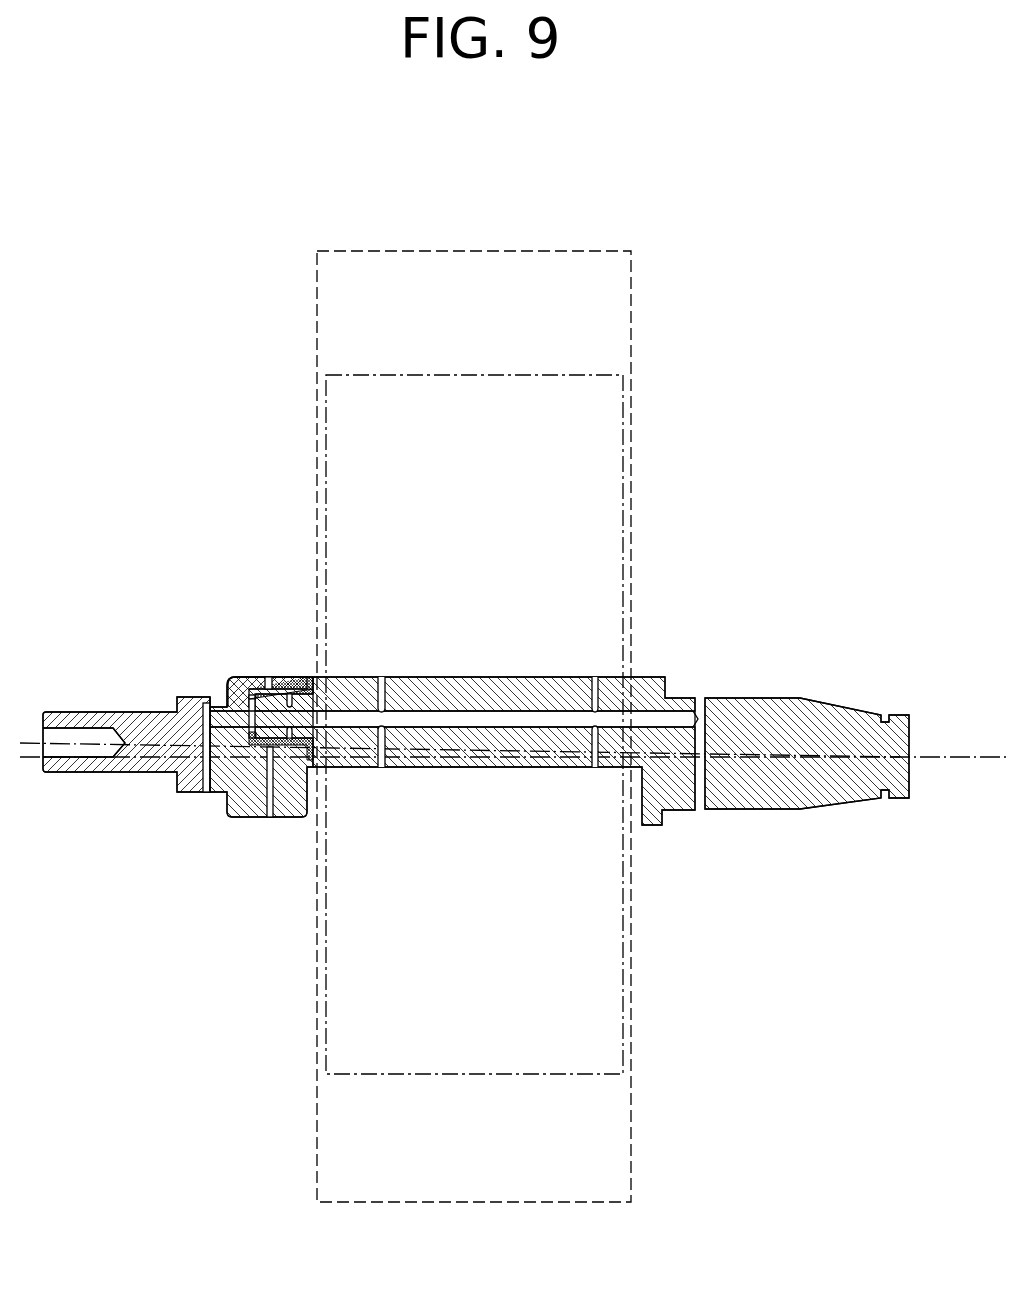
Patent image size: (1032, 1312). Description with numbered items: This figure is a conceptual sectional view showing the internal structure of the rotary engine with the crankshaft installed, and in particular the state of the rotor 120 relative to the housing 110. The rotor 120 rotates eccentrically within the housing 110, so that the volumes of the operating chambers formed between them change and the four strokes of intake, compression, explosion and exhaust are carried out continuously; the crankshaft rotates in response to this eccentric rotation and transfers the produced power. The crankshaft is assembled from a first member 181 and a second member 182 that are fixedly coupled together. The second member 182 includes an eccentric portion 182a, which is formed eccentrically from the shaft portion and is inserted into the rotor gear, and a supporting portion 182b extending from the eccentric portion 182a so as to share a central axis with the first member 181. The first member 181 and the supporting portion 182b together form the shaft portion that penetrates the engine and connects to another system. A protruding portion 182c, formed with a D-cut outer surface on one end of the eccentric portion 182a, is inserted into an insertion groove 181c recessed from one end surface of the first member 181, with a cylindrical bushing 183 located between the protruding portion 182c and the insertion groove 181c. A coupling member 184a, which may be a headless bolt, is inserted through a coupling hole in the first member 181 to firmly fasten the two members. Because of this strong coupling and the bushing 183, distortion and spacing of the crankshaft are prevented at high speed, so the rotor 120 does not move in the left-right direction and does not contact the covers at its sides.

The housing 110 is at (317, 364).
The rotor 120 is at (326, 452).
The first member 181 is at (132, 717).
The insertion groove 181c is at (233, 675).
The second member 182 is at (770, 628).
The eccentric portion 182a is at (576, 682).
The supporting portion 182b is at (750, 698).
The protruding portion 182c is at (257, 744).
The bushing 183 is at (293, 675).
The coupling member 184a is at (269, 817).